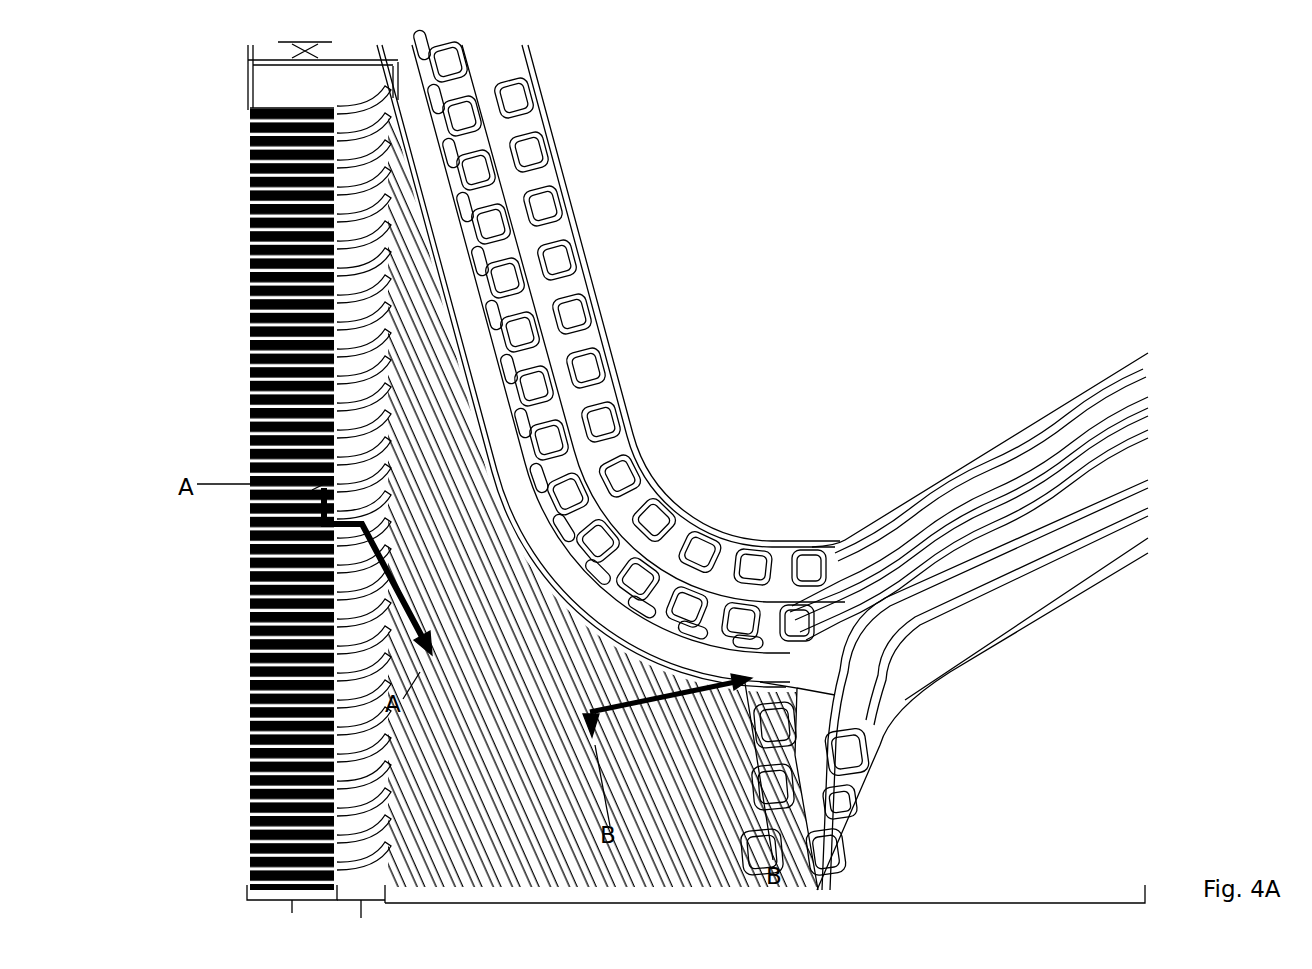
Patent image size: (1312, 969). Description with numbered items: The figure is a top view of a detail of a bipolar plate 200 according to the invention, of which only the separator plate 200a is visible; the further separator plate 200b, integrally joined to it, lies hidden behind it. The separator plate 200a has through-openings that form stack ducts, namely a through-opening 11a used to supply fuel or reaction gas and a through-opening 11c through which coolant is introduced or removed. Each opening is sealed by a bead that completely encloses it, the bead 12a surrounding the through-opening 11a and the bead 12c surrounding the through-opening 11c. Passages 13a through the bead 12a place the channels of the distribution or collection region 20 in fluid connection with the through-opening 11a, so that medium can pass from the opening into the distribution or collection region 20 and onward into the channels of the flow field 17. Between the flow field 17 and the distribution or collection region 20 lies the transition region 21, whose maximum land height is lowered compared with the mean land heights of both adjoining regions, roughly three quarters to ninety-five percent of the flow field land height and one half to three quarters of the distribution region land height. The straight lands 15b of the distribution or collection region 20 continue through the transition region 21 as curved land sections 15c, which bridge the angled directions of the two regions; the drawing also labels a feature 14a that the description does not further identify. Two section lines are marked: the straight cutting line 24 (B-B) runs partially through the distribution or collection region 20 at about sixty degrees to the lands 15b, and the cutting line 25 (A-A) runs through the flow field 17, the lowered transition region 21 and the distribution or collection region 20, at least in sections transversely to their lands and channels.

The bipolar plate 200 is at (913, 332).
The separator plate 200a is at (836, 192).
The further separator plate 200b is at (206, 206).
The through-opening 11a is at (787, 350).
The through-opening 11c is at (1033, 832).
The bead 12a is at (1078, 432).
The bead 12c is at (1071, 540).
The passages 13a is at (612, 415).
The first flow field boundary 14a is at (368, 203).
The lands of the distribution or collection region 15b is at (556, 597).
The land sections 15c is at (390, 345).
The flow field 17 is at (322, 502).
The distribution or collection region 20 is at (765, 903).
The transition region 21 is at (364, 524).
The cutting line 24 is at (678, 880).
The cutting line 25 is at (330, 593).